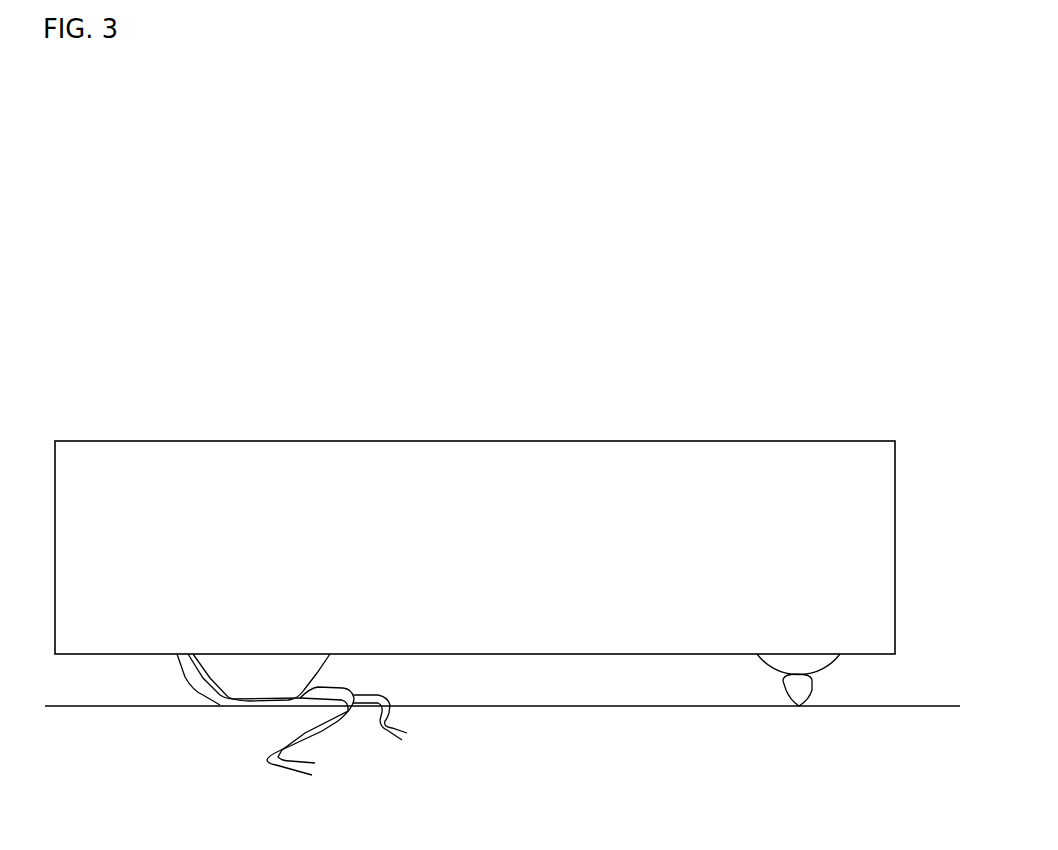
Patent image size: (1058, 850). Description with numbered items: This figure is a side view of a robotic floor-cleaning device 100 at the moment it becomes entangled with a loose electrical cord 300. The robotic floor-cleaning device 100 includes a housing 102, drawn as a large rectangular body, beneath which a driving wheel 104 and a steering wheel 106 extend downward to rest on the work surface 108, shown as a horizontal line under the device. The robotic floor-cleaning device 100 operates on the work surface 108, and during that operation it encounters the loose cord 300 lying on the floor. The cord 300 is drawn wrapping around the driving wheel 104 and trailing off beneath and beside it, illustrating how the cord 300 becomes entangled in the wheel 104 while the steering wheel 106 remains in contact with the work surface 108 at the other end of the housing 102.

The robotic floor-cleaning device 100 is at (476, 368).
The housing 102 is at (475, 547).
The driving wheel 104 is at (261, 677).
The steering wheel 106 is at (812, 687).
The work surface 108 is at (502, 722).
The cord 300 is at (265, 757).